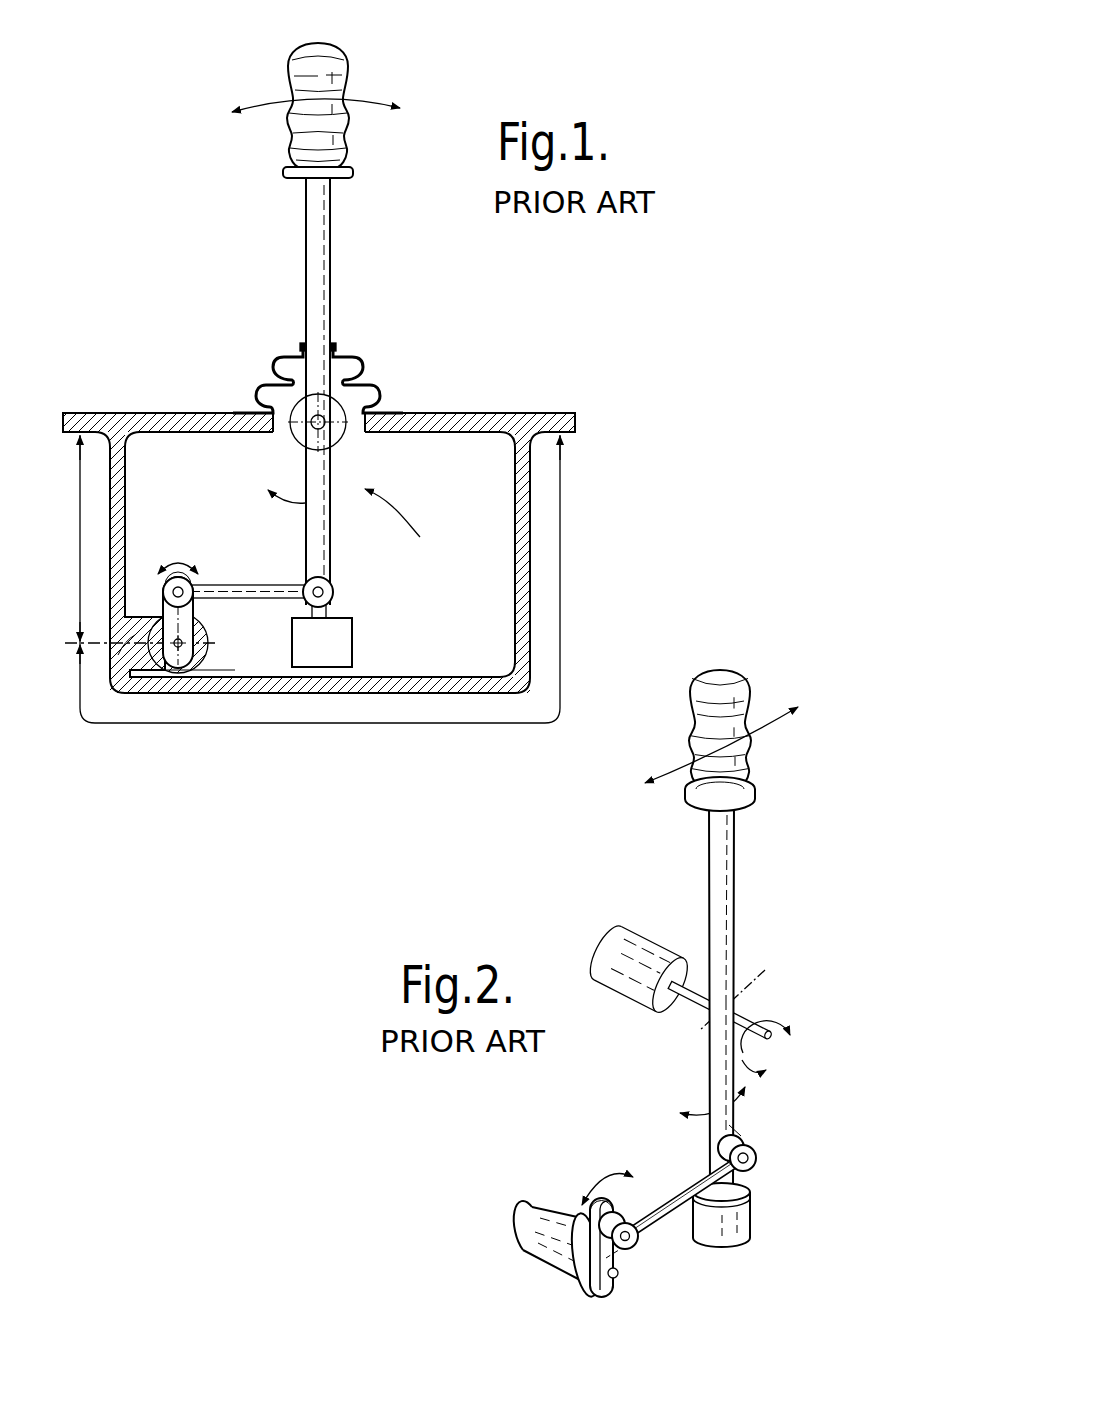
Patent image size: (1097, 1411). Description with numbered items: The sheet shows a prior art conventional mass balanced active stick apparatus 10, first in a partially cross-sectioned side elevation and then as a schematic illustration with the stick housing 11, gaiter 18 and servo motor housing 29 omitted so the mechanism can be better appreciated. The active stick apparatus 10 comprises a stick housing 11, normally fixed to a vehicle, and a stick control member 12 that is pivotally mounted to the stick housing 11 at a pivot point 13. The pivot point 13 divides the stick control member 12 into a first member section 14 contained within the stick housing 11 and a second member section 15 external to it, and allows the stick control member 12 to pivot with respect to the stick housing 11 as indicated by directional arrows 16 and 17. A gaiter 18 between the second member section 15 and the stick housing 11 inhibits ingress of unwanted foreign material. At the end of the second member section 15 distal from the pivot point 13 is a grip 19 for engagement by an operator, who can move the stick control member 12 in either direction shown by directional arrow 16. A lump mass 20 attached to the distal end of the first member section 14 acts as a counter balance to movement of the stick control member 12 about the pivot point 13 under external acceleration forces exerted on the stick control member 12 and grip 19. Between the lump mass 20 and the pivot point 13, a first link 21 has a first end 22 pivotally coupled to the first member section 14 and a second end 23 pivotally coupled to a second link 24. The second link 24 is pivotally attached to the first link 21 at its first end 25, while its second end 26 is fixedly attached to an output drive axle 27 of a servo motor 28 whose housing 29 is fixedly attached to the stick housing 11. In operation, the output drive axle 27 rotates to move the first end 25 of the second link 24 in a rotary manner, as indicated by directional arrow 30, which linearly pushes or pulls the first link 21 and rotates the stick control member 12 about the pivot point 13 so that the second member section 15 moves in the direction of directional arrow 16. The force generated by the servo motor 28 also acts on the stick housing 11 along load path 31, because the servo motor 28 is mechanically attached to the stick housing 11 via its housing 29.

In FIG. 1, the active stick apparatus 10 is at (178, 185).
In FIG. 2, the active stick apparatus 10 is at (845, 778).
In FIG. 1, the stick housing 11 is at (520, 513).
In FIG. 1, the stick control member 12 is at (328, 212).
In FIG. 2, the stick control member 12 is at (735, 868).
In FIG. 1, the pivot point 13 is at (314, 418).
In FIG. 2, the pivot point 13 is at (765, 975).
In FIG. 1, the first member section 14 is at (323, 480).
In FIG. 2, the first member section 14 is at (712, 1063).
In FIG. 1, the second member section 15 is at (311, 256).
In FIG. 2, the second member section 15 is at (712, 892).
In FIG. 1, the directional arrow 16 is at (268, 100).
In FIG. 2, the directional arrow 16 is at (778, 706).
In FIG. 1, the directional arrow 17 is at (354, 525).
In FIG. 2, the directional arrow 17 is at (740, 1100).
In FIG. 1, the gaiter 18 is at (350, 356).
In FIG. 1, the grip 19 is at (330, 57).
In FIG. 2, the grip 19 is at (727, 683).
In FIG. 1, the lump mass 20 is at (333, 650).
In FIG. 2, the lump mass 20 is at (733, 1233).
In FIG. 1, the first link 21 is at (270, 598).
In FIG. 2, the first link 21 is at (662, 1203).
In FIG. 1, the first end 22 is at (335, 592).
In FIG. 2, the first end 22 is at (752, 1150).
In FIG. 1, the second end 23 is at (183, 589).
In FIG. 2, the second end 23 is at (630, 1223).
In FIG. 1, the second link 24 is at (172, 618).
In FIG. 2, the second link 24 is at (585, 1268).
In FIG. 1, the first end 25 is at (163, 585).
In FIG. 2, the first end 25 is at (590, 1208).
In FIG. 1, the second end 26 is at (190, 658).
In FIG. 2, the second end 26 is at (622, 1265).
In FIG. 1, the output drive axle 27 is at (178, 648).
In FIG. 2, the output drive axle 27 is at (613, 1280).
In FIG. 1, the servo motor 28 is at (152, 669).
In FIG. 2, the servo motor 28 is at (578, 1276).
In FIG. 1, the housing 29 is at (130, 650).
In FIG. 2, the housing 29 is at (530, 1240).
In FIG. 1, the directional arrow 30 is at (176, 562).
In FIG. 2, the directional arrow 30 is at (608, 1198).
In FIG. 1, the load path 31 is at (560, 570).